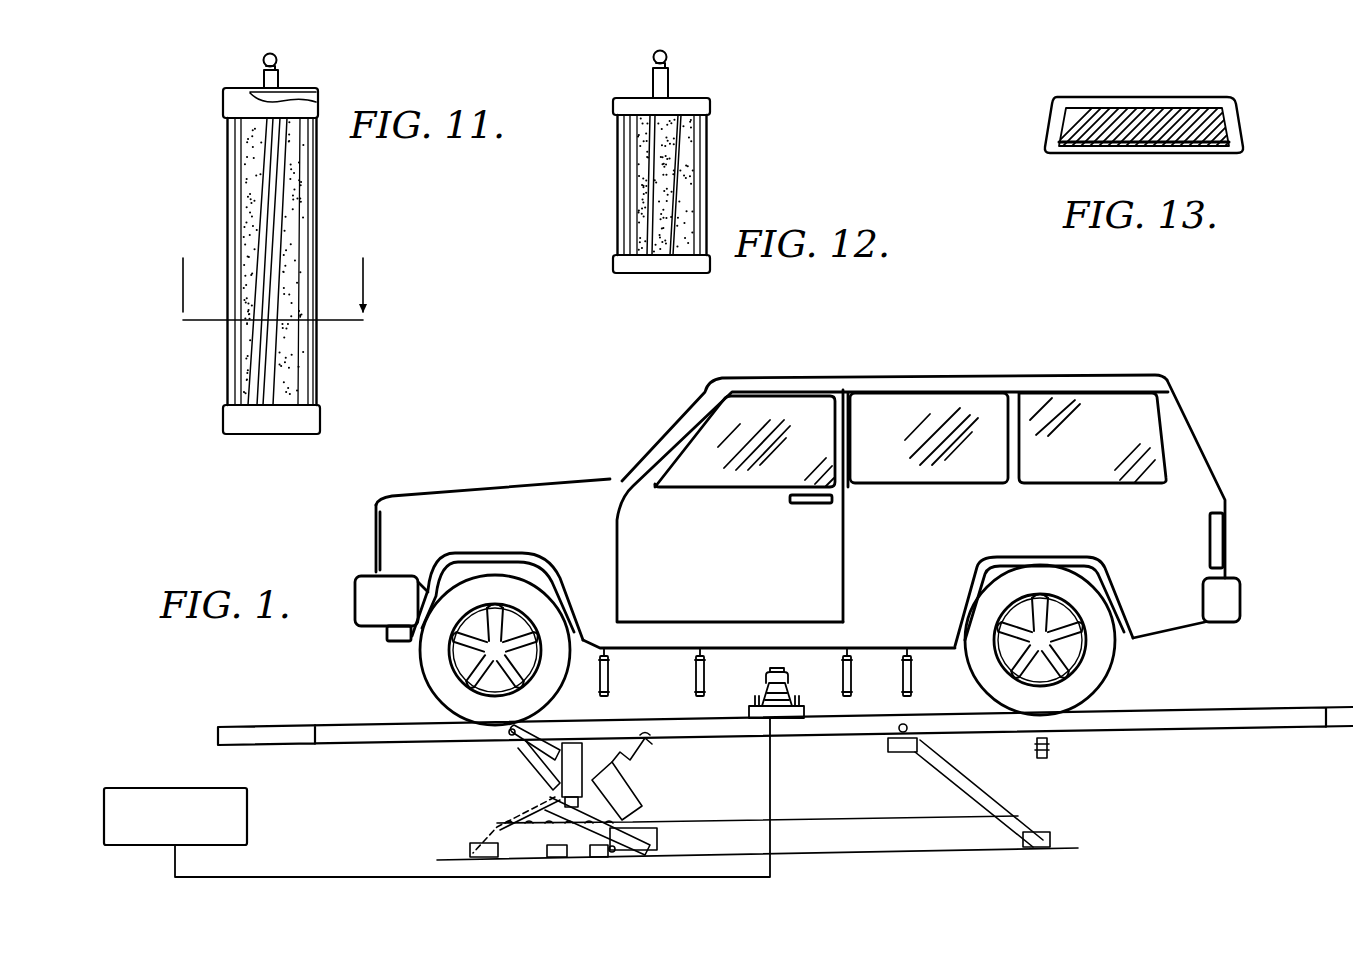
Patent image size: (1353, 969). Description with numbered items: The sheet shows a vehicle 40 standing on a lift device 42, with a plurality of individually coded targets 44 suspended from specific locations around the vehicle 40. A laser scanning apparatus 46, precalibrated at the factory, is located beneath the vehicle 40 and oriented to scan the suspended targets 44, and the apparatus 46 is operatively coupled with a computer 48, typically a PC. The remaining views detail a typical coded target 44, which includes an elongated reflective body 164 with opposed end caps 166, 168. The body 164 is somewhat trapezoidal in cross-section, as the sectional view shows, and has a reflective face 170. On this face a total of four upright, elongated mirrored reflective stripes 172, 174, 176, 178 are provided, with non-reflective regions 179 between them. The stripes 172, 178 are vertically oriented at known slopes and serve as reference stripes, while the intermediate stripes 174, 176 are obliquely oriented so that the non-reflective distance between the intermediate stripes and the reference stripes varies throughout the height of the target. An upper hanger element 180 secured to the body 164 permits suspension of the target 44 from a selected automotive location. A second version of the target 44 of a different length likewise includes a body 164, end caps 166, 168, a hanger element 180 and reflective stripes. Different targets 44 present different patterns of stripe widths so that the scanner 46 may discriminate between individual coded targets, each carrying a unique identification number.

In FIG. 1, the vehicle 40 is at (1200, 401).
In FIG. 1, the lift device 42 is at (1274, 700).
In FIG. 11, the coded target 44 is at (214, 92).
In FIG. 12, the coded target 44 is at (722, 99).
In FIG. 13, the coded target 44 is at (1048, 106).
In FIG. 1, the coded target 44 is at (690, 685).
In FIG. 1, the laser scanning apparatus 46 is at (758, 684).
In FIG. 1, the computer 48 is at (165, 790).
In FIG. 11, the reflective body 164 is at (316, 172).
In FIG. 12, the reflective body 164 is at (708, 174).
In FIG. 13, the reflective body 164 is at (1150, 108).
In FIG. 11, the end cap 166 is at (310, 90).
In FIG. 12, the end cap 166 is at (618, 106).
In FIG. 11, the end cap 168 is at (252, 440).
In FIG. 12, the end cap 168 is at (656, 276).
In FIG. 13, the end cap 168 is at (1238, 126).
In FIG. 11, the reflective face 170 is at (252, 142).
In FIG. 13, the reflective face 170 is at (1078, 150).
In FIG. 11, the reflective stripe 172 is at (311, 340).
In FIG. 12, the reflective stripe 172 is at (698, 203).
In FIG. 11, the reflective stripe 174 is at (262, 390).
In FIG. 12, the reflective stripe 174 is at (675, 242).
In FIG. 11, the reflective stripe 176 is at (252, 350).
In FIG. 12, the reflective stripe 176 is at (650, 201).
In FIG. 11, the reflective stripe 178 is at (239, 178).
In FIG. 12, the reflective stripe 178 is at (628, 152).
In FIG. 11, the non-reflective region 179 is at (290, 385).
In FIG. 12, the non-reflective region 179 is at (685, 152).
In FIG. 11, the hanger element 180 is at (265, 62).
In FIG. 12, the hanger element 180 is at (652, 86).